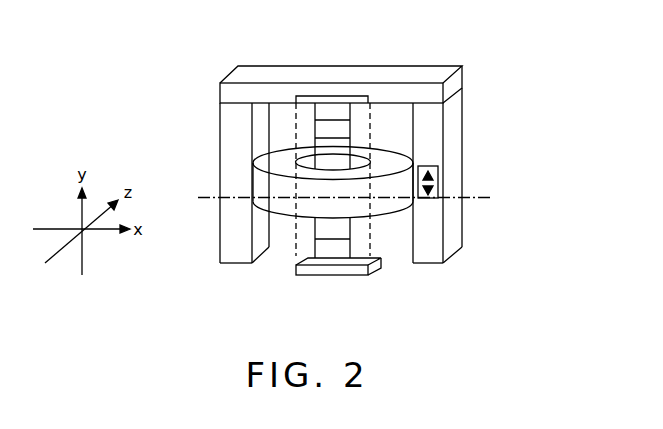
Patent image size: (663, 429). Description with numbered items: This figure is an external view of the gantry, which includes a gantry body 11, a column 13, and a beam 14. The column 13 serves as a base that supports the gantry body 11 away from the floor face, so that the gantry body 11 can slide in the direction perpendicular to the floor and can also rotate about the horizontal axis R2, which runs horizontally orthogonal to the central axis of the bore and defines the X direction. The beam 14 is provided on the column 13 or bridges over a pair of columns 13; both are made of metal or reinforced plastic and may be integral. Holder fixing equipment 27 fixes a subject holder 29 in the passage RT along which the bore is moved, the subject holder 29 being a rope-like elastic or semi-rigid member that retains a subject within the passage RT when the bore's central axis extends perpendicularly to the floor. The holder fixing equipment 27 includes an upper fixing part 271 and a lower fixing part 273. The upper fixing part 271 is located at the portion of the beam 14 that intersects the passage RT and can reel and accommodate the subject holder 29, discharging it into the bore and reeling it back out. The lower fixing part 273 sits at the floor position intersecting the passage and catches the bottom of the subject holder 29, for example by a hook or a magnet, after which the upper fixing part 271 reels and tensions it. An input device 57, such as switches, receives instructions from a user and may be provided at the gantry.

The beam 14 is at (342, 66).
The column 13 is at (222, 118).
The gantry body 11 is at (382, 151).
The passage RT is at (300, 157).
The horizontal axis R2 is at (358, 187).
The holder fixing equipment 27 is at (355, 221).
The upper fixing part 271 is at (360, 98).
The lower fixing part 273 is at (338, 286).
The subject holder 29 is at (304, 249).
The input device 57 is at (431, 208).